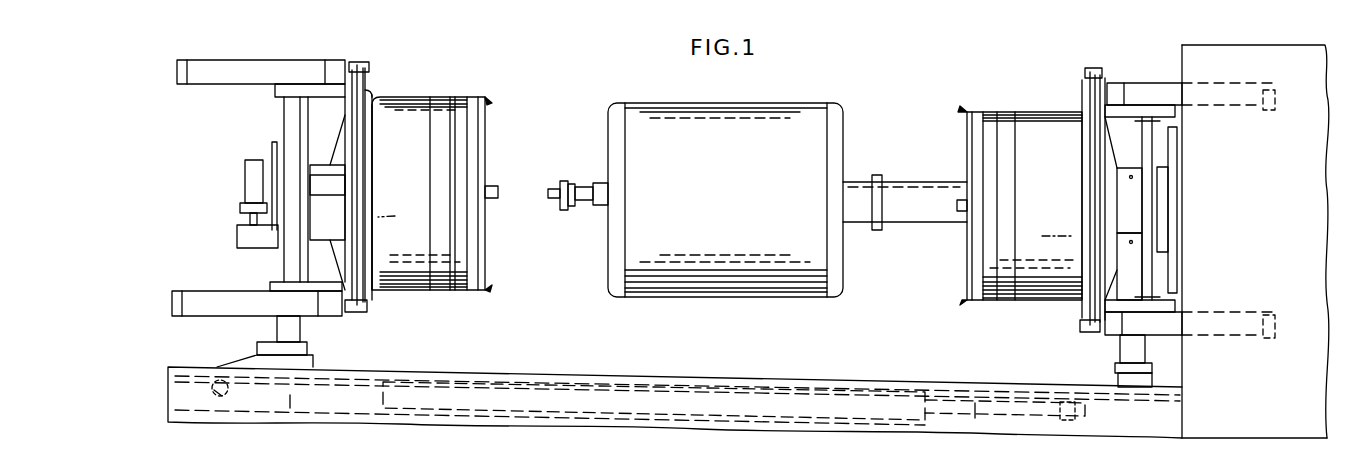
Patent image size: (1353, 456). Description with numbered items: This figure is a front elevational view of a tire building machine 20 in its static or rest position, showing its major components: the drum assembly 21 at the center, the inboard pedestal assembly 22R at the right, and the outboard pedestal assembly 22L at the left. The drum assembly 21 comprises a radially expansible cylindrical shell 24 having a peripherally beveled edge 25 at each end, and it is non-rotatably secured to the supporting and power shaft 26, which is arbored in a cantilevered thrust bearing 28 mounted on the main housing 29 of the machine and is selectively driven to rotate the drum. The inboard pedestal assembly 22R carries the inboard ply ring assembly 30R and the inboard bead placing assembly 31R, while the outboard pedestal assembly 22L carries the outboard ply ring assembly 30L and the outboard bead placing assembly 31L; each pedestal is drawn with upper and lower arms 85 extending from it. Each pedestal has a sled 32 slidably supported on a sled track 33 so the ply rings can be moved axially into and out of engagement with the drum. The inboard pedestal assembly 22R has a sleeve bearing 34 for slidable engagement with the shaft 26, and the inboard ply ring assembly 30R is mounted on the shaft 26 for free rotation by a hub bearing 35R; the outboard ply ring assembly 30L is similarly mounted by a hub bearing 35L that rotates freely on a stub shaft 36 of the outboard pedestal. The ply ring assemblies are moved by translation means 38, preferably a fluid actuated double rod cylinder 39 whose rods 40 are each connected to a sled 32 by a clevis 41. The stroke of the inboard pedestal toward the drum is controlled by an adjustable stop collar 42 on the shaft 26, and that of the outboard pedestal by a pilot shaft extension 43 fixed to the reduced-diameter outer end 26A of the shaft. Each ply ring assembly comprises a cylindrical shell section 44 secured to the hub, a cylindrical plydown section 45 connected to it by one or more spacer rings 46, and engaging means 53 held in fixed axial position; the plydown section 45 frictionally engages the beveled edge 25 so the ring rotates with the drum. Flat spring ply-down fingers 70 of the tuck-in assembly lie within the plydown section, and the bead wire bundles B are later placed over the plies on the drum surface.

The tire building machine 20 is at (727, 189).
The drum assembly 21 is at (727, 195).
The outboard pedestal assembly 22L is at (684, 210).
The inboard pedestal assembly 22R is at (1138, 196).
The cylindrical shell 24 is at (688, 297).
The peripherally beveled edge 25 is at (617, 104).
The supporting and power shaft 26 is at (862, 226).
The reduced diameter portion of shaft 26A is at (600, 208).
The cantilevered thrust bearing 28 is at (1177, 218).
The main housing 29 is at (1270, 60).
The outboard ply ring assembly 30L is at (713, 198).
The inboard ply ring assembly 30R is at (1040, 302).
The outboard bead placing assembly 31L is at (364, 312).
The inboard bead placing assembly 31R is at (1090, 326).
The sled 32 is at (318, 362).
The sled track 33 is at (478, 372).
The sleeve bearing 34 is at (1135, 198).
The outboard hub bearing 35L is at (345, 176).
The inboard hub bearing 35R is at (1110, 224).
The stub shaft 36 is at (316, 172).
The translation means 38 is at (608, 376).
The double rod cylinder 39 is at (700, 382).
The rod 40 is at (290, 408).
The clevis 41 is at (227, 400).
The adjustable stop collar 42 is at (878, 176).
The pilot shaft extension 43 is at (556, 202).
The cylindrical shell section 44 is at (410, 100).
The cylindrical plydown section 45 is at (454, 292).
The spacer ring 46 is at (450, 100).
The engaging means 53 is at (472, 97).
The ply-down finger 70 is at (490, 103).
The support arm 85 is at (192, 86).
The bead wire bundle B is at (725, 226).